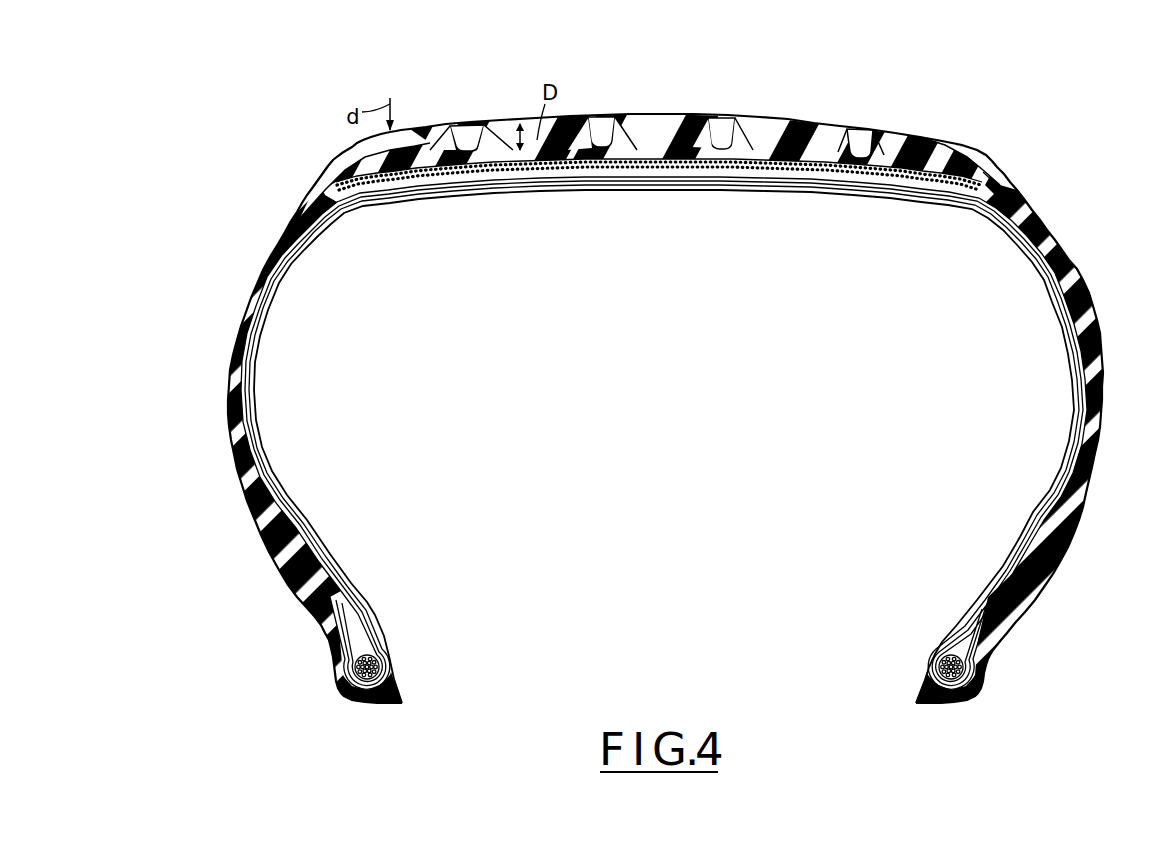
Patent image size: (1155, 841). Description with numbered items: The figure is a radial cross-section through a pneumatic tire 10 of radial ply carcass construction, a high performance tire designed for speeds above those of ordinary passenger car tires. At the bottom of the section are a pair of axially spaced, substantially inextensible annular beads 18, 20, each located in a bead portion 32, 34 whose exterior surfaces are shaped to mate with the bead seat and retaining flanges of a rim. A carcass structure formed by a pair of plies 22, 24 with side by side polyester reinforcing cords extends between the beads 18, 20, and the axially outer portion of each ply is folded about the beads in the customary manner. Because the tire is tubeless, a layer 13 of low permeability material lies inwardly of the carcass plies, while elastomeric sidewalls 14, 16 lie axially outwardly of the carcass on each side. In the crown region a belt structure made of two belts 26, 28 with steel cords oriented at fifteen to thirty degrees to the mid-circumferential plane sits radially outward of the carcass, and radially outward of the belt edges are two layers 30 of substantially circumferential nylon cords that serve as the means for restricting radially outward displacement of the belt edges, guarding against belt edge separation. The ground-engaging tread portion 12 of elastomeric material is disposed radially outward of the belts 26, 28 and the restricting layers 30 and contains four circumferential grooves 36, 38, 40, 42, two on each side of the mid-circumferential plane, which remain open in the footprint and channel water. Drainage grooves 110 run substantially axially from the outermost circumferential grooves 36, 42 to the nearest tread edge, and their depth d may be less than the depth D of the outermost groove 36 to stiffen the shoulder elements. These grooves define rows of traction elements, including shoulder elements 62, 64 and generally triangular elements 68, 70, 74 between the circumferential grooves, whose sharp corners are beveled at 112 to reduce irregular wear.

The pneumatic tire 10 is at (358, 87).
The tread portion 12 is at (908, 125).
The layer of low permeability material 13 is at (250, 383).
The sidewall 14 is at (230, 373).
The sidewall 16 is at (1090, 340).
The bead 18 is at (380, 665).
The bead 20 is at (940, 670).
The carcass ply 22 is at (355, 600).
The carcass ply 24 is at (378, 617).
The belt 26 is at (380, 190).
The belt 28 is at (410, 180).
The means for restricting displacement of belt edges 30 is at (997, 170).
The bead portion 32 is at (338, 650).
The bead portion 34 is at (985, 650).
The circumferential groove 36 is at (467, 132).
The circumferential groove 38 is at (600, 124).
The circumferential groove 40 is at (723, 123).
The circumferential groove 42 is at (860, 130).
The traction element 62 is at (353, 153).
The traction element 64 is at (973, 147).
The traction element 68 is at (520, 122).
The traction element 70 is at (650, 118).
The traction element 74 is at (793, 118).
The drainage groove 110 is at (410, 142).
The bevel 112 is at (490, 128).